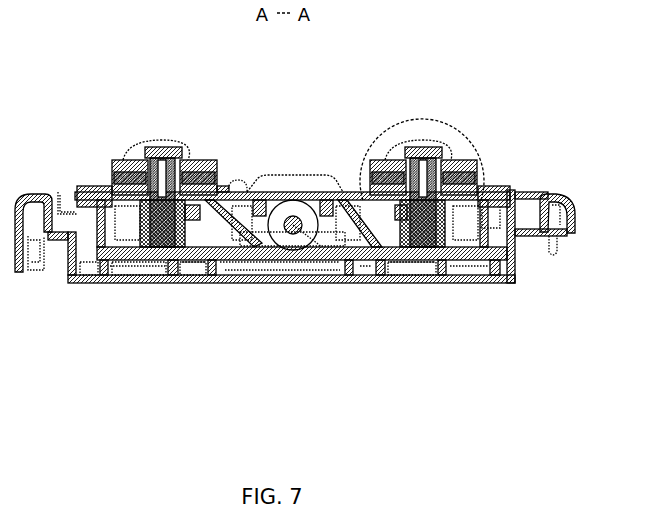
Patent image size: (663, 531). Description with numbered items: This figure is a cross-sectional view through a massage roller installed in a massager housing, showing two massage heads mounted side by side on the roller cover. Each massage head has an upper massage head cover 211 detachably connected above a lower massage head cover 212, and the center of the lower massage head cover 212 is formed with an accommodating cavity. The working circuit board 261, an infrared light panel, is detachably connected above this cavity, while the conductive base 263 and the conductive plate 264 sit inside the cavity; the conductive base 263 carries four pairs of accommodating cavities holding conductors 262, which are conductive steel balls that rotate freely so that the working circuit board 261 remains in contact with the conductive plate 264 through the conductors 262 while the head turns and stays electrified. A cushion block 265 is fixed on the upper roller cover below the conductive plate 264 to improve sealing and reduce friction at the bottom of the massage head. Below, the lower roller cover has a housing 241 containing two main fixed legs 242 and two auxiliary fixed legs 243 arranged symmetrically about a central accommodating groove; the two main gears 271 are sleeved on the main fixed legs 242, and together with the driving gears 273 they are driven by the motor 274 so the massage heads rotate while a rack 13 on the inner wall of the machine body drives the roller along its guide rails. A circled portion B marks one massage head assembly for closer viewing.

The rack 13 is at (487, 286).
The upper massage head cover 211 is at (147, 150).
The lower massage head cover 212 is at (230, 185).
The housing 241 is at (110, 286).
The main fixed legs 242 is at (146, 286).
The auxiliary fixed legs 243 is at (208, 286).
The working circuit board 261 is at (383, 157).
The conductors 262 is at (192, 160).
The conductive base 263 is at (470, 165).
The conductive plate 264 is at (110, 186).
The cushion block 265 is at (490, 190).
The main gears 271 is at (427, 286).
The driving gears 273 is at (267, 286).
The motor 274 is at (307, 286).
The enlarged portion B is at (362, 162).